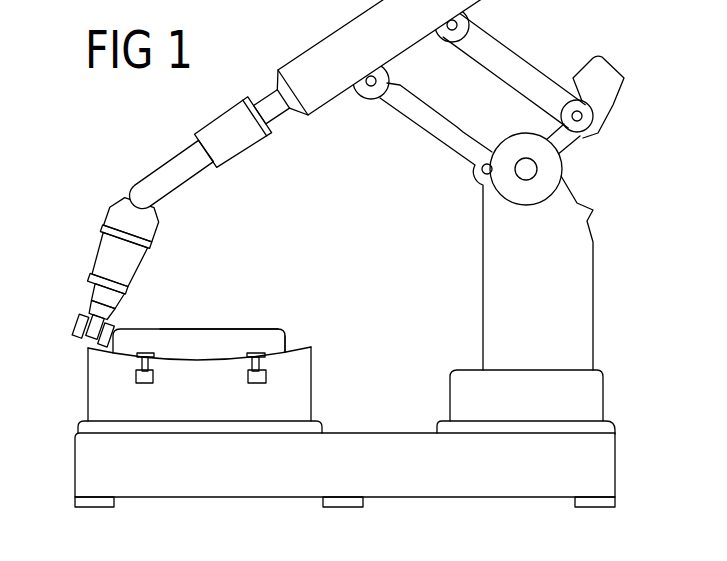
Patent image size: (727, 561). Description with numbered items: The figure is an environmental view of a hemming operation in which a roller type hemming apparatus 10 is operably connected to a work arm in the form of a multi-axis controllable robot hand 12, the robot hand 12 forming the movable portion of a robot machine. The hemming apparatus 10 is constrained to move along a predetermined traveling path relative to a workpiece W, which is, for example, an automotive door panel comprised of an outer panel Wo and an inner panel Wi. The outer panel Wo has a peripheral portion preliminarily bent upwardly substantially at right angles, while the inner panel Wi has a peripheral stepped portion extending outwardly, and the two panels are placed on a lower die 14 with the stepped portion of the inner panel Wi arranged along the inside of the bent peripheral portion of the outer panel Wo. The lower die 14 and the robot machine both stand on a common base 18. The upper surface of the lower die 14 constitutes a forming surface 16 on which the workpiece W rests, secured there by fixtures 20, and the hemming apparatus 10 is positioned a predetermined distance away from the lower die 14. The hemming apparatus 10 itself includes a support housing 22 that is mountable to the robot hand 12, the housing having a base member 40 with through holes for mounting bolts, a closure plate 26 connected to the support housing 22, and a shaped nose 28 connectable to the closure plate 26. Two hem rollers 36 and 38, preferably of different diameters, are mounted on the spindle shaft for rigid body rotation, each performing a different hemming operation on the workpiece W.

The roller type hemming apparatus 10 is at (180, 267).
The robot hand 12 is at (330, 43).
The lower die 14 is at (107, 389).
The forming surface 16 is at (203, 358).
The common base 18 is at (258, 480).
The fixtures 20 is at (150, 353).
The support housing 22 is at (118, 260).
The closure plate 26 is at (108, 283).
The shaped nose 28 is at (104, 303).
The hem roller 36 is at (106, 335).
The hem roller 38 is at (88, 326).
The base member 40 is at (131, 221).
The workpiece W is at (292, 290).
The inner panel Wi is at (263, 331).
The outer panel Wo is at (283, 336).